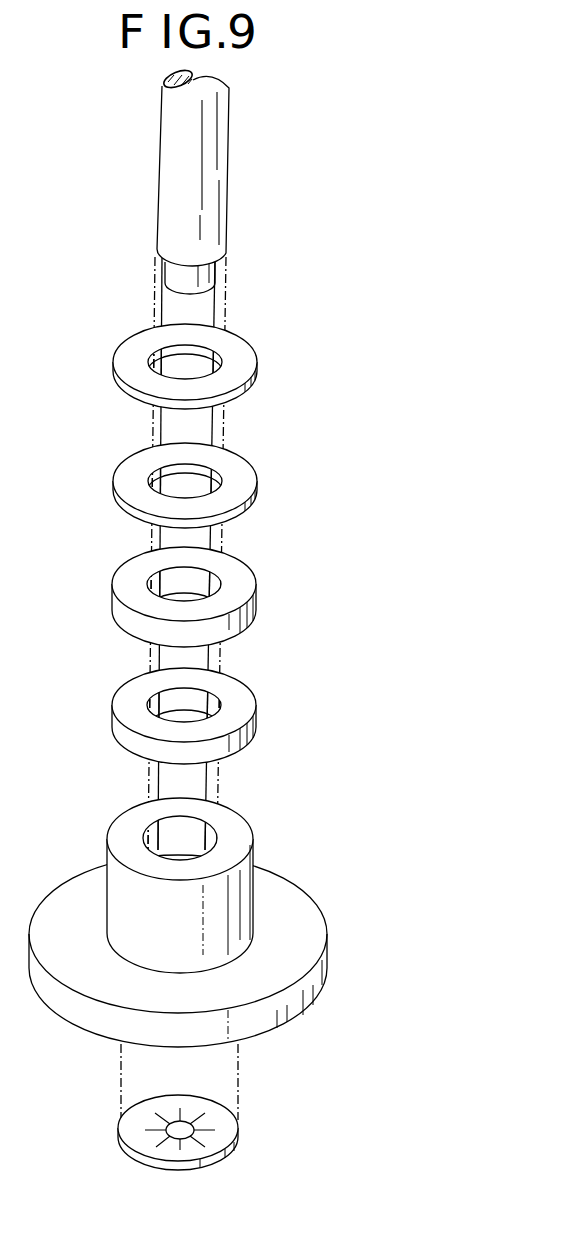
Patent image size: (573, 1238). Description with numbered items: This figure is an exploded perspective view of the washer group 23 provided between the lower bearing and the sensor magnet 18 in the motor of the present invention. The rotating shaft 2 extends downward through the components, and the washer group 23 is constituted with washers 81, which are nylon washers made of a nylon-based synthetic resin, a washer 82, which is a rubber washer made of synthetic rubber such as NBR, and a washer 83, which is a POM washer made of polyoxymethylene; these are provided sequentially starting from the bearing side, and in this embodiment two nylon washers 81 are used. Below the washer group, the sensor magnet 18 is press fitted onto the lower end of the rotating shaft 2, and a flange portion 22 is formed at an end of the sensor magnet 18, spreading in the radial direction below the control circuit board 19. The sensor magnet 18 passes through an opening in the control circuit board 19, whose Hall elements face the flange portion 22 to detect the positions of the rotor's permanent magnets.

The rotating shaft 2 is at (212, 180).
The washers 81 is at (242, 372).
The washer 82 is at (238, 587).
The washer 83 is at (240, 705).
The sensor magnet 18 is at (225, 893).
The flange portion 22 is at (300, 945).
The control circuit board 19 is at (223, 1137).
The washer group 23 is at (368, 502).